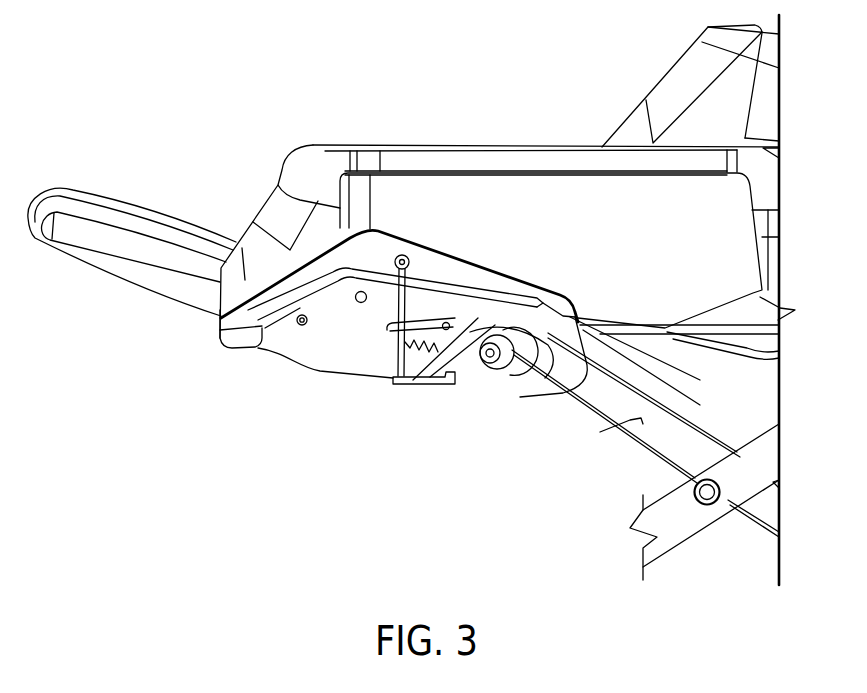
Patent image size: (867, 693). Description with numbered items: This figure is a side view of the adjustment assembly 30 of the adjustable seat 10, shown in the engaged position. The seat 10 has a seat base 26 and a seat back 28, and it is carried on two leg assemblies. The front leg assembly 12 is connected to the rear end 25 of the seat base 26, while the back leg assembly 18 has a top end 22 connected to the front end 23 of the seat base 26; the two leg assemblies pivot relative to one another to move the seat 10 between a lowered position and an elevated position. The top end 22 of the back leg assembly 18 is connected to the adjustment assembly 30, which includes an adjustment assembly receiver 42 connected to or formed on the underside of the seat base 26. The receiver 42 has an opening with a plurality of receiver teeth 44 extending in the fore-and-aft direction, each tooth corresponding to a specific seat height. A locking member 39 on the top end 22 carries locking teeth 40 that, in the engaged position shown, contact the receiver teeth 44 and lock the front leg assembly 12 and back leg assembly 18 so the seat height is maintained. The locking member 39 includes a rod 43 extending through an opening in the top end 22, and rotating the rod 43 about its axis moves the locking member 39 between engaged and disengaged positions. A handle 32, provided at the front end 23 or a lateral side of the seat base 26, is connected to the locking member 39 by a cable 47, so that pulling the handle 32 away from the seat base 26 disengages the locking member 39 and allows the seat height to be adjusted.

The seat 10 is at (380, 50).
The front leg assembly 12 is at (687, 517).
The back leg assembly 18 is at (664, 437).
The top end 22 is at (510, 375).
The front end 23 is at (242, 343).
The rear end 25 is at (770, 291).
The seat base 26 is at (443, 160).
The seat back 28 is at (687, 80).
The adjustment assembly 30 is at (481, 375).
The handle 32 is at (127, 203).
The locking member 39 is at (432, 340).
The locking teeth 40 is at (393, 378).
The adjustment assembly receiver 42 is at (347, 348).
The rod 43 is at (444, 310).
The receiver teeth 44 is at (420, 385).
The cable 47 is at (607, 413).